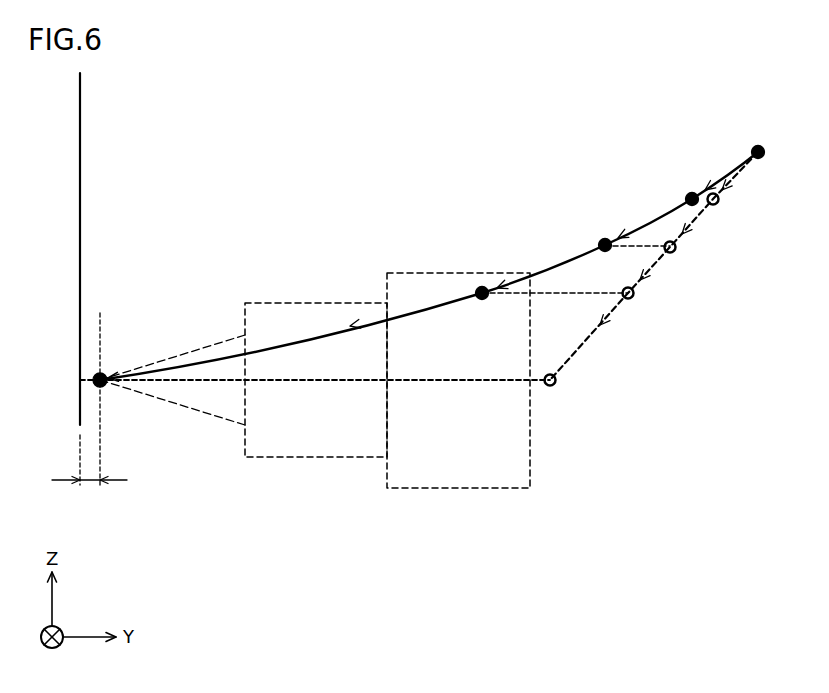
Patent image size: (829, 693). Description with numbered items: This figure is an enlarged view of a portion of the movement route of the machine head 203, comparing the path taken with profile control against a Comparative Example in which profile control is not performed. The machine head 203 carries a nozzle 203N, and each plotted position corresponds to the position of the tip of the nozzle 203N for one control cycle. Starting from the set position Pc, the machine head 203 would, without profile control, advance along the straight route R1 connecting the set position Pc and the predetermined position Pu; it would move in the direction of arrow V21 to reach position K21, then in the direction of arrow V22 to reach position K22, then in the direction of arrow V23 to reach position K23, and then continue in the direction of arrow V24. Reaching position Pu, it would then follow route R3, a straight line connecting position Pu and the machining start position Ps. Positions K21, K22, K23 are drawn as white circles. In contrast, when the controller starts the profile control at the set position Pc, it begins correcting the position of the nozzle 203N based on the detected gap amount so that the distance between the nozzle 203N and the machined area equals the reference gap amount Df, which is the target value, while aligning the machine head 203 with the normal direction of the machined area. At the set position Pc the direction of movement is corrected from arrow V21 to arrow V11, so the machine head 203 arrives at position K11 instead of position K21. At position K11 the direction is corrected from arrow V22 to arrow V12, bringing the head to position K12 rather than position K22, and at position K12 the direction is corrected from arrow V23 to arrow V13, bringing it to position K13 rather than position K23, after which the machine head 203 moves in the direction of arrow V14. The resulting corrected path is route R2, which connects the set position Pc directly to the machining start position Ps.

The machine head 203 is at (416, 490).
The nozzle 203N is at (190, 412).
The set position Pc is at (762, 146).
The machining start position Ps is at (105, 372).
The position Pu is at (553, 388).
The position K11 is at (684, 198).
The position K12 is at (598, 244).
The position K13 is at (475, 292).
The position K21 is at (720, 200).
The position K22 is at (677, 247).
The position K23 is at (636, 293).
The arrow V11 is at (735, 172).
The arrow V12 is at (660, 218).
The arrow V13 is at (565, 262).
The arrow V14 is at (378, 318).
The arrow V21 is at (735, 178).
The arrow V22 is at (696, 224).
The arrow V23 is at (655, 265).
The arrow V24 is at (614, 312).
The route R1 is at (580, 350).
The route R2 is at (444, 305).
The route R3 is at (452, 383).
The reference gap amount Df is at (92, 486).